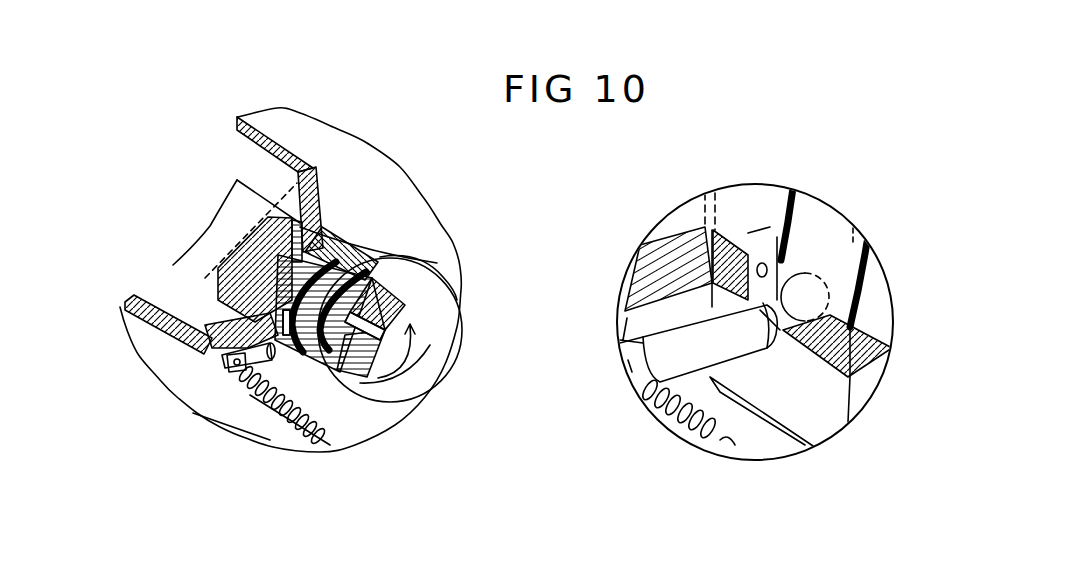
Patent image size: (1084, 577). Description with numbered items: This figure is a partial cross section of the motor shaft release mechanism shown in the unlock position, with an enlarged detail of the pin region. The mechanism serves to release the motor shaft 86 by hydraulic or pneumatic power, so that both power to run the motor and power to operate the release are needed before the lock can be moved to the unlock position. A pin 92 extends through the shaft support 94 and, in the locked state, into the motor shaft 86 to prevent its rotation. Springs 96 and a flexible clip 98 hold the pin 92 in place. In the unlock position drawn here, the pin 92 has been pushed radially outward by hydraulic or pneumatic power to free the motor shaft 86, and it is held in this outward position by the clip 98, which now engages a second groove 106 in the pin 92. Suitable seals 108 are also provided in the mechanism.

The motor shaft 86 is at (212, 226).
The pin 92 is at (215, 352).
The shaft support 94 is at (445, 343).
The springs 96 is at (302, 402).
The flexible clip 98 is at (207, 282).
The second groove 106 is at (444, 350).
The seals 108 is at (645, 240).